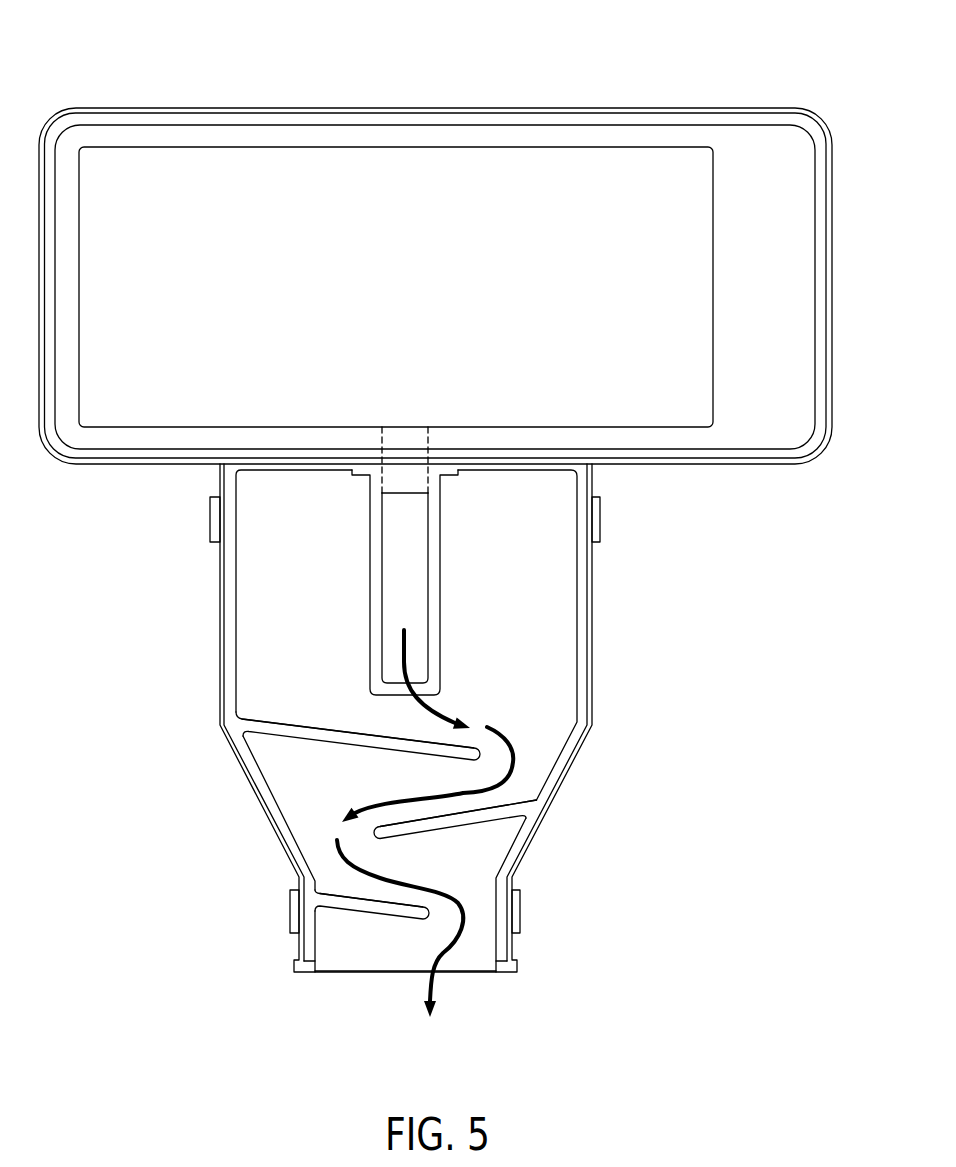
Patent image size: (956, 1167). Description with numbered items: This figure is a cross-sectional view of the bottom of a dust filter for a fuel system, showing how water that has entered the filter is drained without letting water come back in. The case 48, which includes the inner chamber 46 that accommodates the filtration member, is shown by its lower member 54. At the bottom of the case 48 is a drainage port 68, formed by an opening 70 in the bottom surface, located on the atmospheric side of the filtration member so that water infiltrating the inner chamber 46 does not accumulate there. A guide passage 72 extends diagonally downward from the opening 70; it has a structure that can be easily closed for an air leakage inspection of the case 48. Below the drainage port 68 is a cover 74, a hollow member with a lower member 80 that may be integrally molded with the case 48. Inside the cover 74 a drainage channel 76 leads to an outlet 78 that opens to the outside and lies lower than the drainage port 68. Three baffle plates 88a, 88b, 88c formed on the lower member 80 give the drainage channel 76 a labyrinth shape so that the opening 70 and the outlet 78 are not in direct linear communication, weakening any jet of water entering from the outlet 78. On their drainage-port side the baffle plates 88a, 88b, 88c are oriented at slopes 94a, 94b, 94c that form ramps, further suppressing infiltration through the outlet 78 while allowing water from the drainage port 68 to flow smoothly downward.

The inner chamber 46 is at (275, 294).
The case 48 is at (222, 90).
The lower member 54 is at (378, 108).
The drainage port 68 is at (428, 408).
The opening 70 is at (383, 440).
The guide passage 72 is at (405, 573).
The cover 74 is at (248, 827).
The drainage channel 76 is at (517, 753).
The outlet 78 is at (352, 947).
The lower member 80 is at (258, 800).
The baffle plate 88a is at (296, 733).
The baffle plate 88b is at (460, 820).
The baffle plate 88c is at (397, 910).
The slope 94a is at (283, 724).
The slope 94b is at (492, 806).
The slope 94c is at (342, 893).